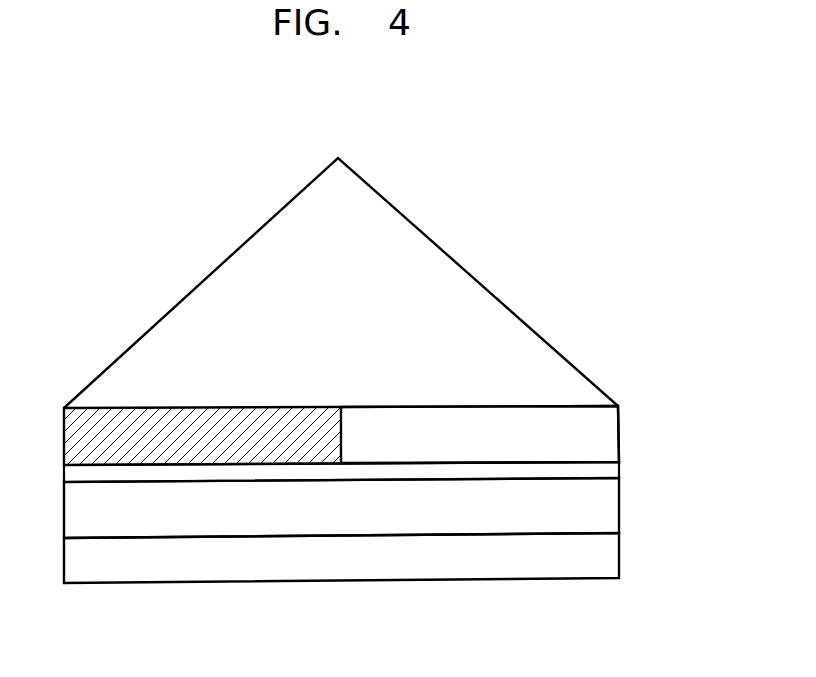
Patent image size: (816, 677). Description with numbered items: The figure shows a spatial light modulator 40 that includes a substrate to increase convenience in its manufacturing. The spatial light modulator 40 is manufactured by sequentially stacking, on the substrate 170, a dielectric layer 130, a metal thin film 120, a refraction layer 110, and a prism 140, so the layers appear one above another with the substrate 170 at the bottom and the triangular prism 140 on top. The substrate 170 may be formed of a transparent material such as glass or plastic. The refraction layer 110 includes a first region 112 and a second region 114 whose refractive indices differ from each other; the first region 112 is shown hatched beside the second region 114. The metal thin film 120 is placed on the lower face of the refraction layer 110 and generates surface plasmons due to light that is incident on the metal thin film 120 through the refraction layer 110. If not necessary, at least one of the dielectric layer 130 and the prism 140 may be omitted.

The spatial light modulator 40 is at (113, 199).
The refraction layer 110 is at (345, 522).
The first region 112 is at (210, 455).
The second region 114 is at (488, 450).
The metal thin film 120 is at (613, 471).
The dielectric layer 130 is at (613, 503).
The prism 140 is at (563, 369).
The substrate 170 is at (613, 557).